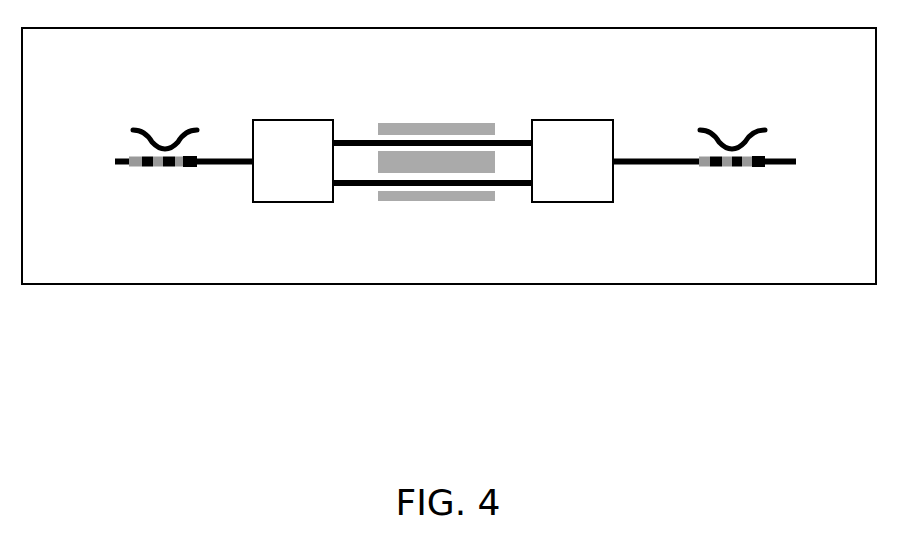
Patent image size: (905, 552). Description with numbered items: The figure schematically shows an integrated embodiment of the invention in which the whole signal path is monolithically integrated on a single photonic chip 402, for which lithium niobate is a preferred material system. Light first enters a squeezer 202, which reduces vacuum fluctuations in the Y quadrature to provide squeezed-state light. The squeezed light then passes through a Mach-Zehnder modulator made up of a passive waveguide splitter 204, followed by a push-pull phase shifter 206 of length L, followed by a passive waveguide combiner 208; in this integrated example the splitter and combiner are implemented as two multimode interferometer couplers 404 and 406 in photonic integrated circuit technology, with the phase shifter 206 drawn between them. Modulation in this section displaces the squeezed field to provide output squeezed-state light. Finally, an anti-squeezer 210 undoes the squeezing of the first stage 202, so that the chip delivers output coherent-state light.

The photonic chip 402 is at (94, 78).
The multimode interferometer coupler 404 is at (320, 177).
The multimode interferometer coupler 406 is at (598, 177).
The squeezer 202 is at (153, 187).
The passive waveguide splitter 204 is at (292, 244).
The phase shifter 206 is at (448, 220).
The passive waveguide combiner 208 is at (572, 244).
The anti-squeezer 210 is at (733, 188).